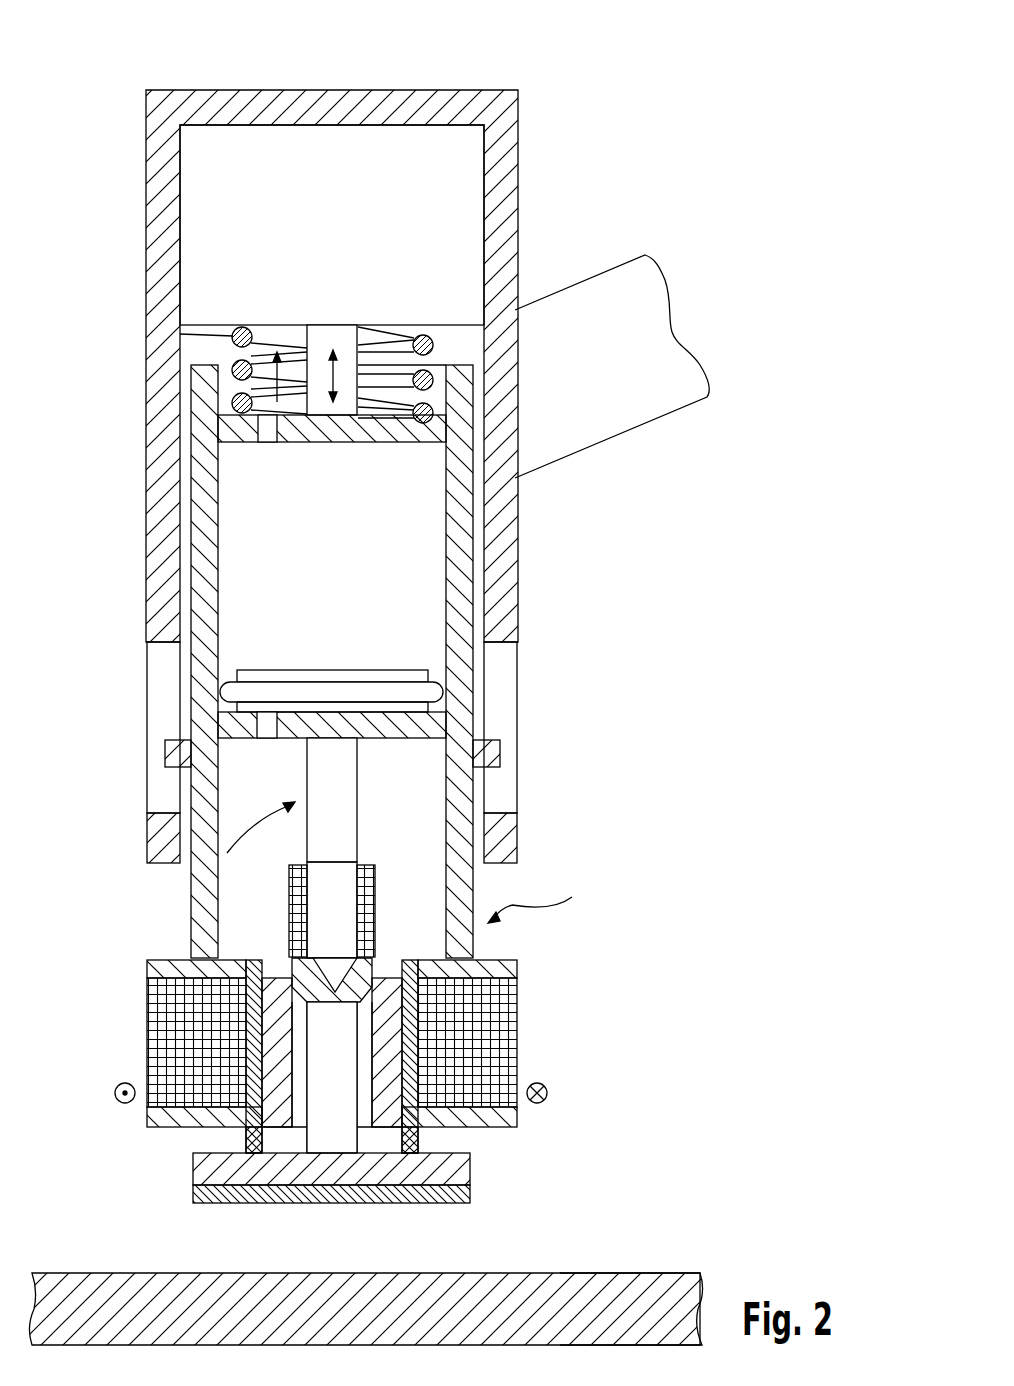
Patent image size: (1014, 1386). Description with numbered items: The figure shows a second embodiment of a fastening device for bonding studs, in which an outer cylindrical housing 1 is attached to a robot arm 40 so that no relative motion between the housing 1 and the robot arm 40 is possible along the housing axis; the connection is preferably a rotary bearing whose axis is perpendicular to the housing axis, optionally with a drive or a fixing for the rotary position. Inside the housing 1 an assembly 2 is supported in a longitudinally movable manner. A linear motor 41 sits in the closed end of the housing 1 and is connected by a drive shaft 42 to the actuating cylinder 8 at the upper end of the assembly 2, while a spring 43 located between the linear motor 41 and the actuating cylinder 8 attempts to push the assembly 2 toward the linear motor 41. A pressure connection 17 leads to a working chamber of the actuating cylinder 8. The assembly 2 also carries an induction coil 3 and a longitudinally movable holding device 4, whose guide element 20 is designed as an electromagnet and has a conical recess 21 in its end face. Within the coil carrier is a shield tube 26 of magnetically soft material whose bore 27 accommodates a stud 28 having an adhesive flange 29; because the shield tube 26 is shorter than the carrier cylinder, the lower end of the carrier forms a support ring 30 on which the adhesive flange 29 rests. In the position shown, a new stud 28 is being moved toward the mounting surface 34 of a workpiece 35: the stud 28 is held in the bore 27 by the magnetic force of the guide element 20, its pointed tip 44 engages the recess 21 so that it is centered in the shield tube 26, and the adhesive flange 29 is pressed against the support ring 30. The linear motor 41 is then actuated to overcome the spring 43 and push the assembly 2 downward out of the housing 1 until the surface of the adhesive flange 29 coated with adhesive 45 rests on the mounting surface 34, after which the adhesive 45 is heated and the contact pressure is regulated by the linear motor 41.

The housing 1 is at (255, 105).
The assembly 2 is at (368, 1010).
The induction coil 3 is at (165, 1020).
The holding device 4 is at (205, 873).
The actuating cylinder 8 is at (205, 508).
The pressure connection 17 is at (268, 733).
The guide element 20 is at (305, 967).
The conical recess 21 is at (367, 972).
The shield tube 26 is at (395, 1018).
The bore 27 is at (372, 1053).
The stud 28 is at (330, 1122).
The adhesive flange 29 is at (448, 1167).
The support ring 30 is at (247, 1138).
The mounting surface 34 is at (577, 1273).
The workpiece 35 is at (648, 1293).
The robot arm 40 is at (605, 428).
The linear motor 41 is at (200, 214).
The drive shaft 42 is at (333, 335).
The spring 43 is at (237, 335).
The pointed tip 44 is at (340, 985).
The adhesive 45 is at (218, 1202).